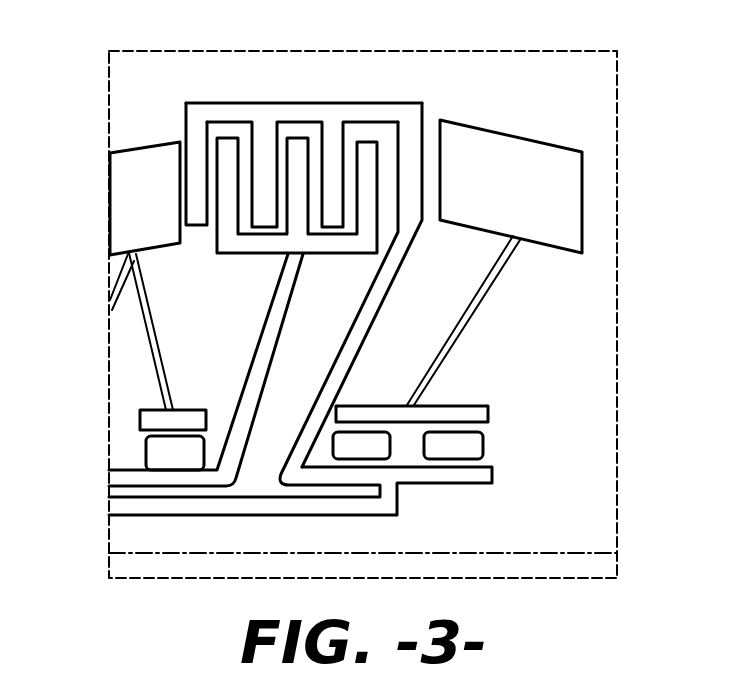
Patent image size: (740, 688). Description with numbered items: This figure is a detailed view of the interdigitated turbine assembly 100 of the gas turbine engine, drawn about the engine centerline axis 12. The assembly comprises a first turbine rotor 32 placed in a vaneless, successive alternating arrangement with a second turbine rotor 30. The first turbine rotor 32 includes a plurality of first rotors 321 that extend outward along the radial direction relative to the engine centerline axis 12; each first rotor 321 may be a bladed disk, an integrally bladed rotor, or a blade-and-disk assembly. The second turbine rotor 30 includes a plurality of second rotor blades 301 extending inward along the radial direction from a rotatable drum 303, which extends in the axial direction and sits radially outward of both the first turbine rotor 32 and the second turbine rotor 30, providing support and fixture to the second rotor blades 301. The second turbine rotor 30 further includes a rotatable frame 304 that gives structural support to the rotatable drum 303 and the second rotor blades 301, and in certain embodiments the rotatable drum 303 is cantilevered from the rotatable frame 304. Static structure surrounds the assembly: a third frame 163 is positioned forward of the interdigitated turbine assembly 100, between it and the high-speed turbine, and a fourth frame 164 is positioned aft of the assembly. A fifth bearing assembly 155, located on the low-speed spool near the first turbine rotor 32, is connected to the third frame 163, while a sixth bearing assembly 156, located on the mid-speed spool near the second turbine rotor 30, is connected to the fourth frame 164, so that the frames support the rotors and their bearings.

The interdigitated turbine assembly 100 is at (185, 42).
The engine centerline axis 12 is at (428, 553).
The second turbine rotor 30 is at (247, 248).
The rotatable drum 303 is at (258, 112).
The second rotor blades 301 is at (343, 155).
The first rotors 321 is at (197, 193).
The rotatable frame 304 is at (422, 202).
The first turbine rotor 32 is at (248, 260).
The third frame 163 is at (133, 148).
The fourth frame 164 is at (503, 133).
The fifth bearing assembly 155 is at (181, 390).
The sixth bearing assembly 156 is at (465, 383).